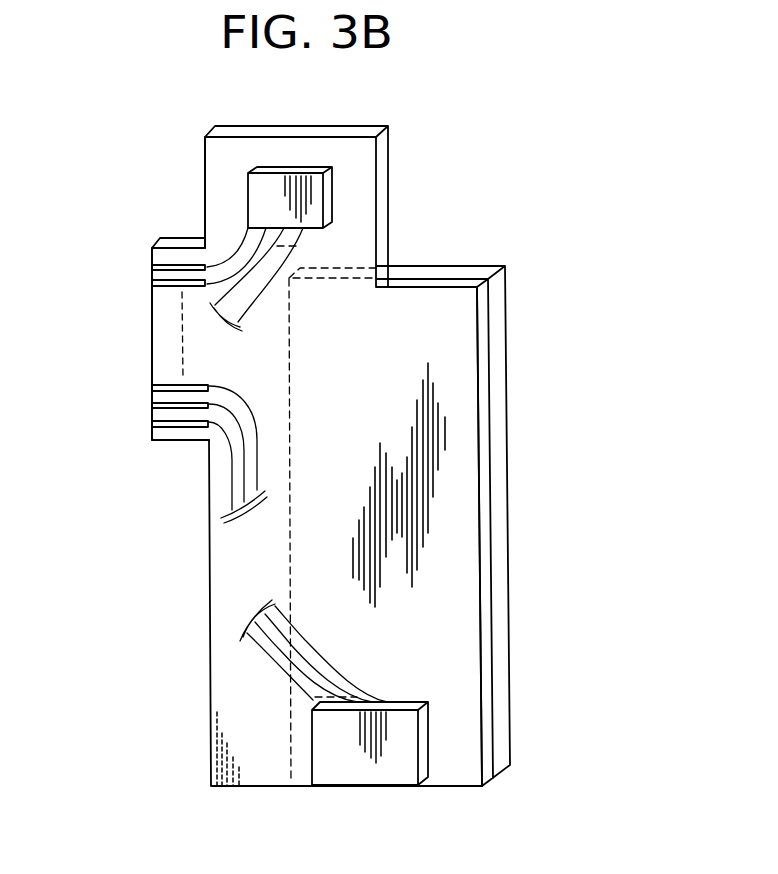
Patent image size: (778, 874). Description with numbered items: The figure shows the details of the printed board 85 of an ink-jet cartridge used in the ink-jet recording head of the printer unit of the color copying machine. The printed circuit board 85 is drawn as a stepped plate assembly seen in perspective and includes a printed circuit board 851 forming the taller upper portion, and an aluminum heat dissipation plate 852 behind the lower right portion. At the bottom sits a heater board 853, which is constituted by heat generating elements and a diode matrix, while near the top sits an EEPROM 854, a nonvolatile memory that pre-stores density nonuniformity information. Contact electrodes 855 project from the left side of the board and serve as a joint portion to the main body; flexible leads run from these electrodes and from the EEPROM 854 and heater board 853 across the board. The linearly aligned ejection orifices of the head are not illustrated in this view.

The printed circuit board 85 is at (507, 505).
The printed circuit board 851 is at (386, 148).
The aluminum heat dissipation plate 852 is at (497, 306).
The heater board 853 is at (420, 747).
The EEPROM 854 is at (325, 199).
The contact electrodes 855 is at (153, 385).